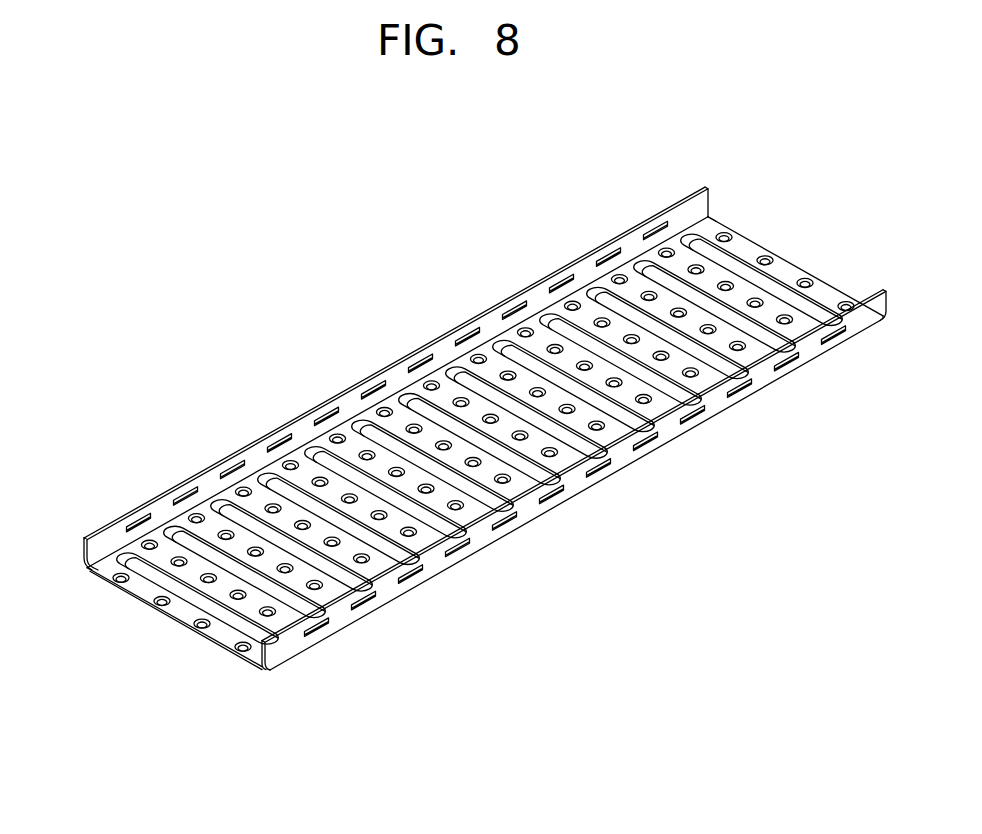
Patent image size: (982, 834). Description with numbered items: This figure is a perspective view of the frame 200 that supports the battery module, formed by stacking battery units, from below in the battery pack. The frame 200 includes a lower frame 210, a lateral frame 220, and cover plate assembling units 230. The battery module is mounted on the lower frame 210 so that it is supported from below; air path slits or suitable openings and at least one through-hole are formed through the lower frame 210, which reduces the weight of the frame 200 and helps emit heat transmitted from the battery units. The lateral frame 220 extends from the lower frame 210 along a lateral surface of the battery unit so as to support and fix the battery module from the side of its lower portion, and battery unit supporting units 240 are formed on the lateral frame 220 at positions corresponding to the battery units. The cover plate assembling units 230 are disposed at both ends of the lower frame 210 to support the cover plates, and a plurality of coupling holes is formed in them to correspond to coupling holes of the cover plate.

The frame 200 is at (366, 307).
The lower frame 210 is at (768, 225).
The lateral frame 220 is at (385, 590).
The cover plate assembling unit 230 is at (783, 270).
The battery unit supporting unit 240 is at (363, 605).